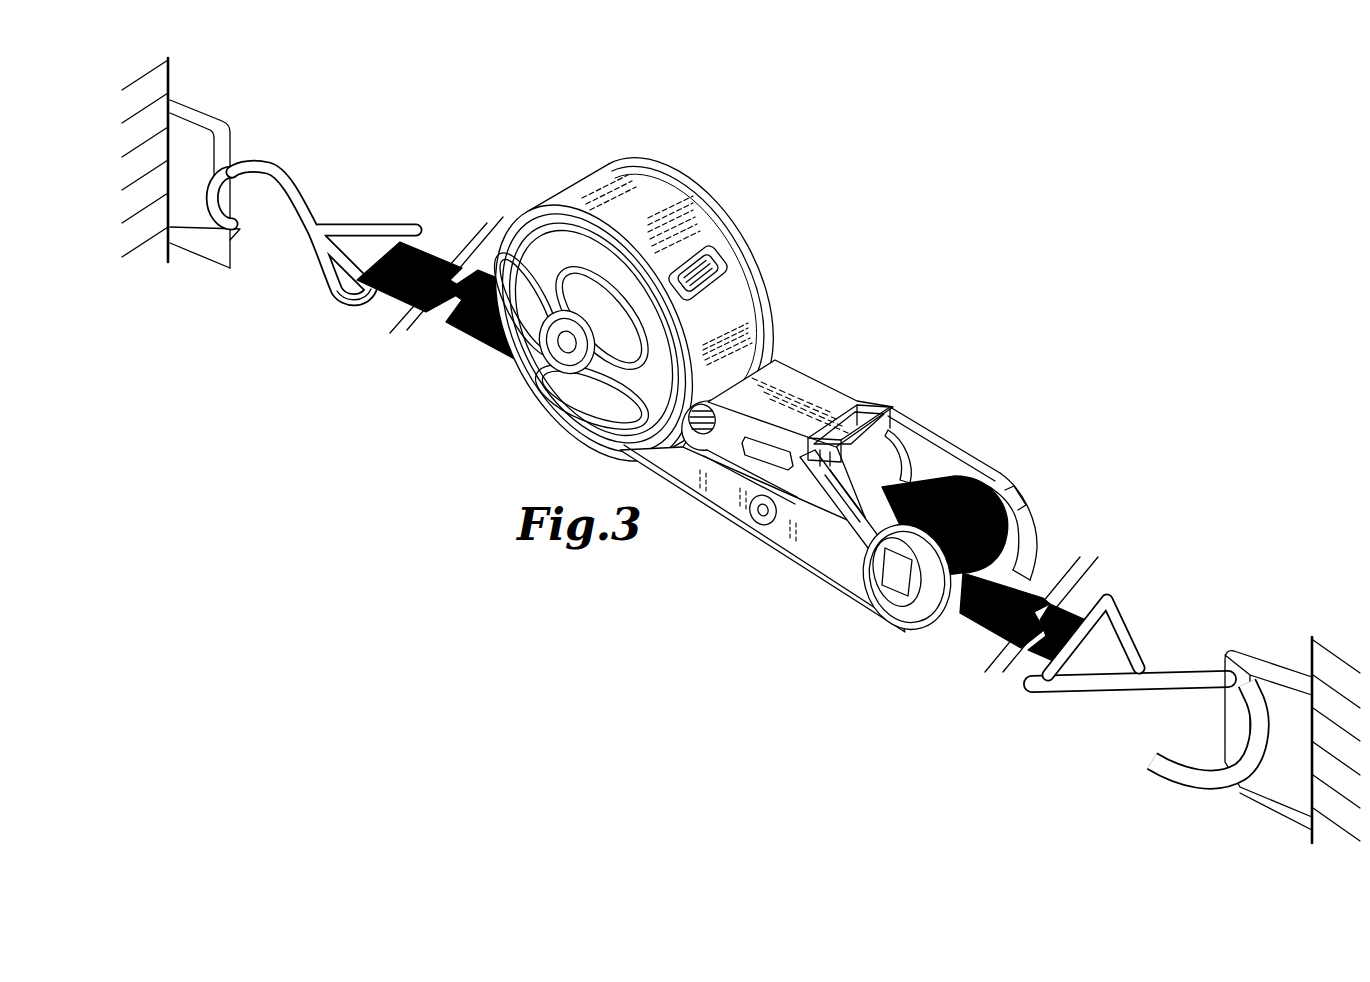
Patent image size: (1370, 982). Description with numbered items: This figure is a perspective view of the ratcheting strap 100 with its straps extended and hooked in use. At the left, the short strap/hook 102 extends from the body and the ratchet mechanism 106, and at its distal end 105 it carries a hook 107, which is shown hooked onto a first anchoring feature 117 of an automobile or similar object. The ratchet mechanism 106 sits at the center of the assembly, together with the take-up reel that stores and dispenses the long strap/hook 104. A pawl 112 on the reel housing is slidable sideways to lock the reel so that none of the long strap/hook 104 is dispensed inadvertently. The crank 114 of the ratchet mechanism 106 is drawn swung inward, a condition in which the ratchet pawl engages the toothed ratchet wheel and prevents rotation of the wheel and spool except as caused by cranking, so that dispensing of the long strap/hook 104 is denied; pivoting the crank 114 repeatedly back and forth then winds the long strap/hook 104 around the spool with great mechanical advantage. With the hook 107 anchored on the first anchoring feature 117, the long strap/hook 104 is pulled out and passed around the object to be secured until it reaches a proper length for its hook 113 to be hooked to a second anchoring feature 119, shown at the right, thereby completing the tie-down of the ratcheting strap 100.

The ratcheting strap 100 is at (727, 395).
The short strap/hook 102 is at (473, 350).
The long strap/hook 104 is at (976, 632).
The distal end 105 is at (370, 299).
The ratchet mechanism 106 is at (1005, 482).
The hook 107 is at (289, 176).
The pawl 112 is at (722, 252).
The hook 113 is at (1020, 693).
The crank 114 is at (818, 390).
The first anchoring feature 117 is at (229, 124).
The second anchoring feature 119 is at (1233, 793).